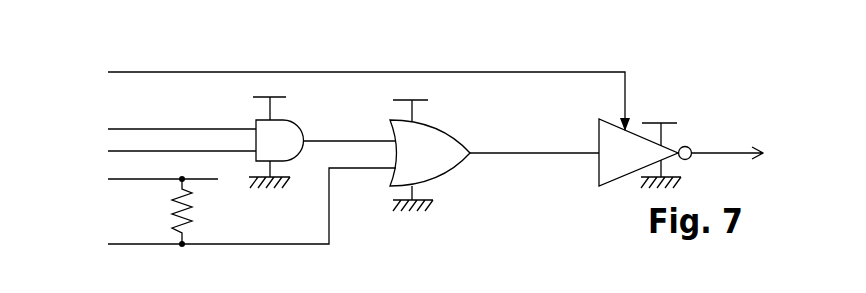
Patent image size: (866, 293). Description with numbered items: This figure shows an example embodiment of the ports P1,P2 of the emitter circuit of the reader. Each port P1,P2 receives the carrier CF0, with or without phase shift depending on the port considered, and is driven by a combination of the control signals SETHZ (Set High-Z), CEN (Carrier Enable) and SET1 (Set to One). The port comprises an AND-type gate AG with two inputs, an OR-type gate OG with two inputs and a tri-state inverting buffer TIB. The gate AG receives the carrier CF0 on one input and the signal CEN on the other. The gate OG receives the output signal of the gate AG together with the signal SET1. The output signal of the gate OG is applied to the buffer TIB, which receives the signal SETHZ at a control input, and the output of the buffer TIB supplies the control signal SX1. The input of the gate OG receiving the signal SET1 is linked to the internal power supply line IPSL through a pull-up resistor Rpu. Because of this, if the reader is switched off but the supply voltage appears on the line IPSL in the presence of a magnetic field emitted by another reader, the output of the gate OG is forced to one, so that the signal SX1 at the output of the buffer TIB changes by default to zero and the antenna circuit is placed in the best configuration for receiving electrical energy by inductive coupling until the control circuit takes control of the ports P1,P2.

The Set High-Z control signal SETHZ is at (327, 95).
The Carrier Enable control signal CEN is at (153, 129).
The carrier CF0 is at (155, 151).
The AND-type gate AG is at (294, 150).
The internal power supply line IPSL is at (150, 181).
The pull-up resistor Rpu is at (192, 221).
The Set to 1 control signal SET1 is at (220, 211).
The OR-type gate OG is at (440, 160).
The ports of the emitter circuit P1,P2 is at (284, 48).
The tri-state inverting buffer TIB is at (642, 162).
The control signal SX1 is at (752, 153).